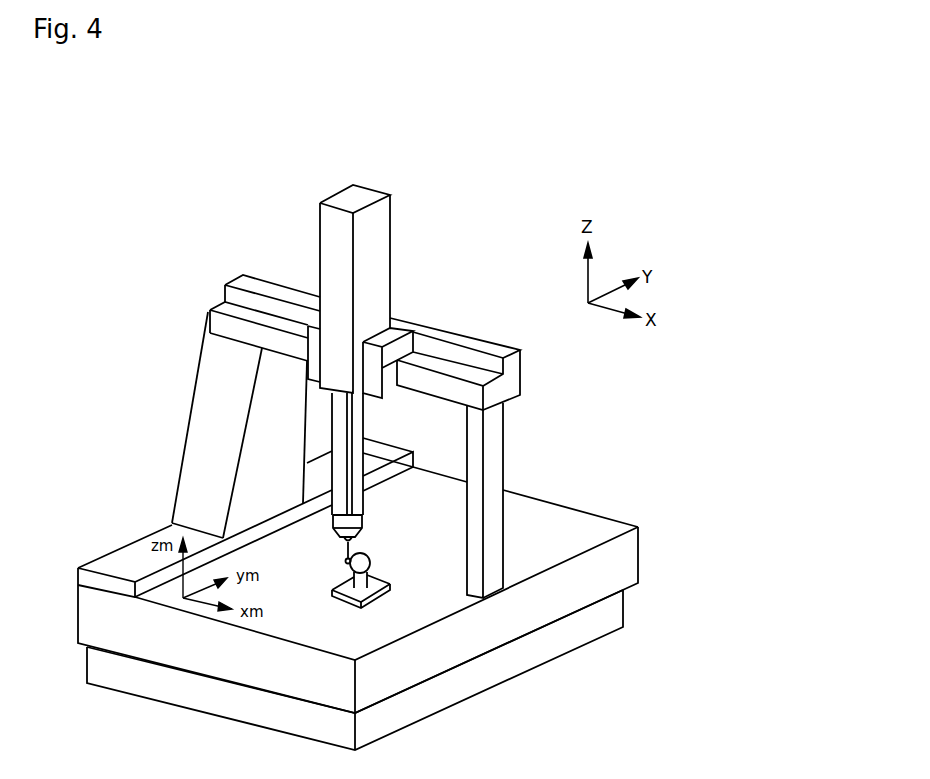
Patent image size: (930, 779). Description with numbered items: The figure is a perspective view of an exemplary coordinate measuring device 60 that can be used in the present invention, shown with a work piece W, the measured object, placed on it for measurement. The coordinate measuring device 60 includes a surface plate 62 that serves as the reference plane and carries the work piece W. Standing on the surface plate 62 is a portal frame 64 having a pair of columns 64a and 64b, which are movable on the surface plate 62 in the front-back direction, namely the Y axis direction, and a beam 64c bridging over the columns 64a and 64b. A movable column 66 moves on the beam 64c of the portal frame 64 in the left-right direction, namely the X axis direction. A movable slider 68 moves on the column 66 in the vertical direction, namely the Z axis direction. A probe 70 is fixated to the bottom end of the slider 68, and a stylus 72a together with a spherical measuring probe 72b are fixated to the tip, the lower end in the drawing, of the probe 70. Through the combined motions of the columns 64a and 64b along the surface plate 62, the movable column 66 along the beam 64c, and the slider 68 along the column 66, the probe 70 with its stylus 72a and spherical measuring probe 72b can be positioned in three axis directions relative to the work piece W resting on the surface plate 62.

The coordinate measuring device 60 is at (216, 206).
The surface plate 62 is at (600, 527).
The portal frame 64 is at (172, 299).
The column 64a is at (497, 443).
The column 64b is at (208, 395).
The beam 64c is at (522, 384).
The movable column 66 is at (402, 332).
The movable slider 68 is at (365, 425).
The probe 70 is at (379, 522).
The stylus 72a is at (345, 553).
The spherical measuring probe 72b is at (347, 567).
The work piece W is at (372, 562).